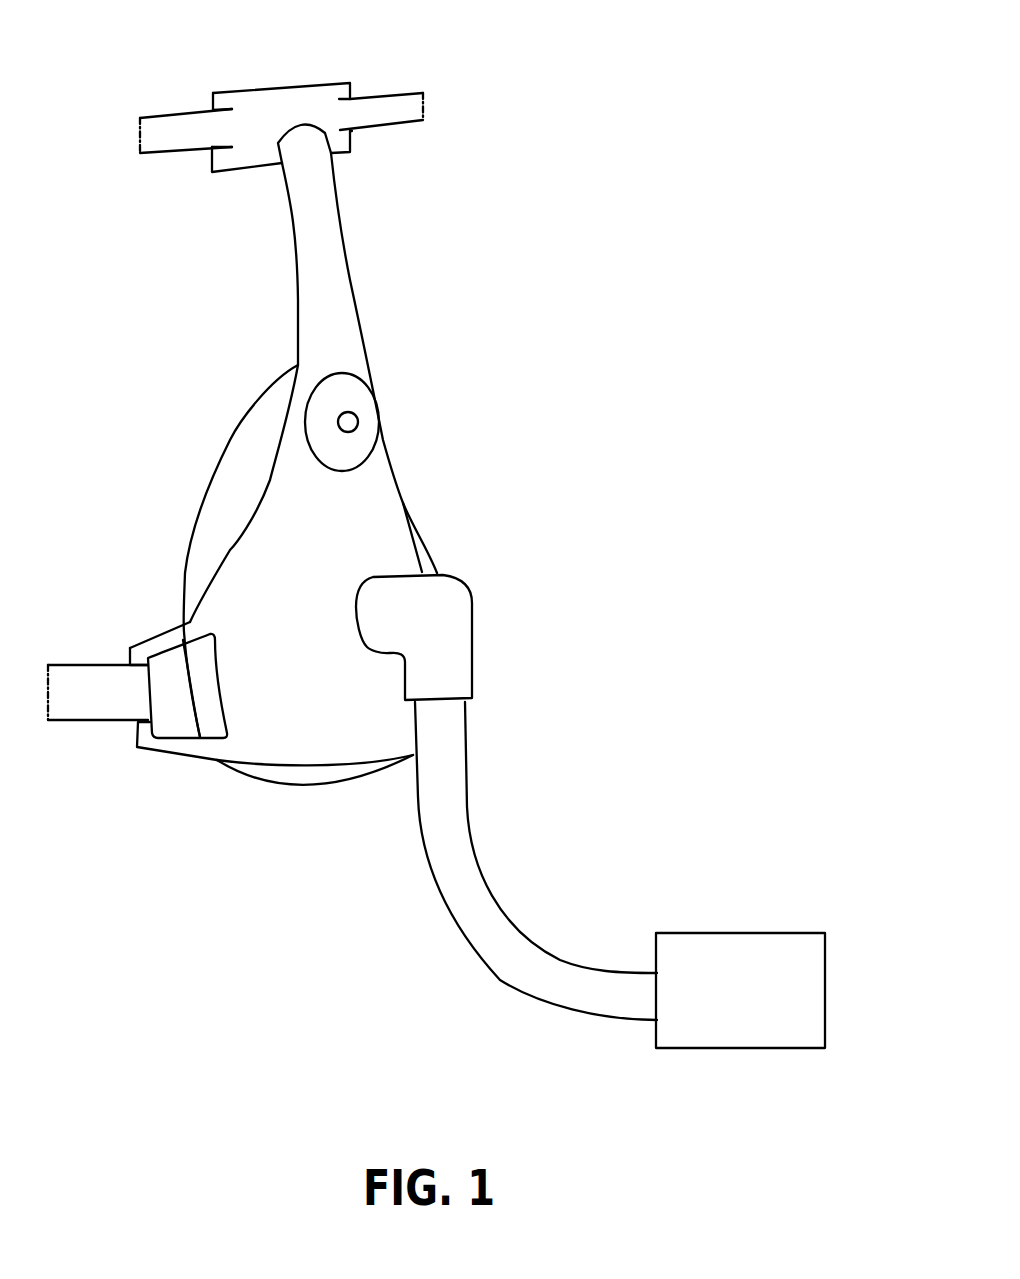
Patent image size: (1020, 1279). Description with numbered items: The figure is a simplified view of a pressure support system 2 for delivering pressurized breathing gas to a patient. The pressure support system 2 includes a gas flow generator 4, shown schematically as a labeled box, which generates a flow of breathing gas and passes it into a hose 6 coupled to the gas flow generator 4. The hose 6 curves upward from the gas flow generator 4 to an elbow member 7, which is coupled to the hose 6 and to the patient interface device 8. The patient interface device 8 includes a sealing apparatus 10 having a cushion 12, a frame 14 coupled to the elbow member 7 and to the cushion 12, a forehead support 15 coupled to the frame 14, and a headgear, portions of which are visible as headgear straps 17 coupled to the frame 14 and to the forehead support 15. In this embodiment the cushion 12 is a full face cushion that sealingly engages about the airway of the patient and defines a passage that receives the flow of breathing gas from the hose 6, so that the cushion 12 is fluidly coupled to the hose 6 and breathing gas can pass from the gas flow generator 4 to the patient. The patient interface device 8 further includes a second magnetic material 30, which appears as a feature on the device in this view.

The pressure support system 2 is at (641, 219).
The gas flow generator 4 is at (752, 1048).
The hose 6 is at (480, 862).
The elbow member 7 is at (473, 603).
The patient interface device 8 is at (532, 417).
The sealing apparatus 10 is at (436, 406).
The cushion 12 is at (227, 477).
The frame 14 is at (265, 735).
The forehead support 15 is at (272, 97).
The headgear straps 17 is at (173, 132).
The second magnetic material 30 is at (350, 397).